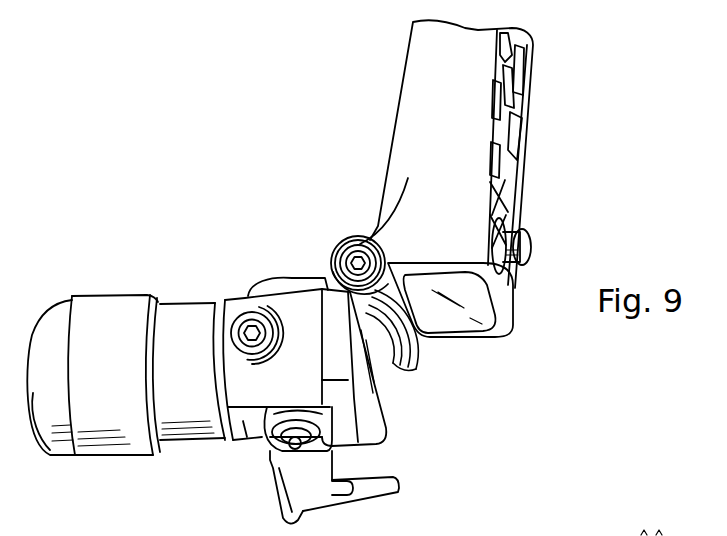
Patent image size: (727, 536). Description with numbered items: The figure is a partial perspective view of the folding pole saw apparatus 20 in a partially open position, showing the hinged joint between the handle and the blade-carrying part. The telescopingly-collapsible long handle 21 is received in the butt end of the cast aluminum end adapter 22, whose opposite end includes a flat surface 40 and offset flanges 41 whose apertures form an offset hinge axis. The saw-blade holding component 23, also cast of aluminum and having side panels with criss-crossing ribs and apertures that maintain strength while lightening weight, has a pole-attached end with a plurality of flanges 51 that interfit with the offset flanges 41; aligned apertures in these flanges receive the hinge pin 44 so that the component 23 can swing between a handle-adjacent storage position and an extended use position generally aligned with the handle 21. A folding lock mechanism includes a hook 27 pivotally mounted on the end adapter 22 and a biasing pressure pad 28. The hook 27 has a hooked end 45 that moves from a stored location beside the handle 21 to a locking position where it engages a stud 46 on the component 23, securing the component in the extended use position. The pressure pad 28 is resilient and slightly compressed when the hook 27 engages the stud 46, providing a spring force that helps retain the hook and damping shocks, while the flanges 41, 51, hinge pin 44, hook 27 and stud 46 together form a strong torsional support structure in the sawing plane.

The pole saw apparatus 20 is at (156, 135).
The long handle 21 is at (53, 317).
The end adapter 22 is at (245, 437).
The saw-blade holding component 23 is at (527, 100).
The hook 27 is at (327, 487).
The pressure pad 28 is at (490, 333).
The flat surface 40 is at (380, 413).
The offset flanges 41 is at (423, 340).
The hinge pin 44 is at (352, 245).
The hooked end 45 is at (380, 494).
The stud 46 is at (535, 248).
The flanges 51 is at (333, 258).